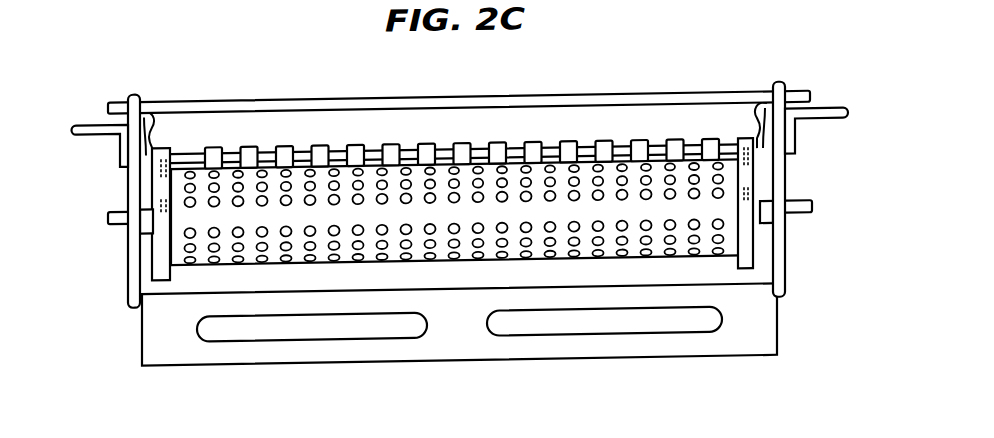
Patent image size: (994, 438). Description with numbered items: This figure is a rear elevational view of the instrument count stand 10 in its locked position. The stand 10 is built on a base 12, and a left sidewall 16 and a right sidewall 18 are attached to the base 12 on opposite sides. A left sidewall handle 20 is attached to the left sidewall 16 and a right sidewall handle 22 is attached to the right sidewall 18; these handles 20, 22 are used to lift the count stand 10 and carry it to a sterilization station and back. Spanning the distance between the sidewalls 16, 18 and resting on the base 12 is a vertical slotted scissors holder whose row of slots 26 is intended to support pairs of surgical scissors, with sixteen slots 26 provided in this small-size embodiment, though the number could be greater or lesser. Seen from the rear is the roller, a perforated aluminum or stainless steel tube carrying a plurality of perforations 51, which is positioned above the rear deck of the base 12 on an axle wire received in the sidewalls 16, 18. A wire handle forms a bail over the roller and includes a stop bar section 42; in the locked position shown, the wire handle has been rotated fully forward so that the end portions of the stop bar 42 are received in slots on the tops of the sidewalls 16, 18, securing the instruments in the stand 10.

The instrument count stand 10 is at (211, 47).
The base 12 is at (748, 358).
The left sidewall 16 is at (128, 276).
The right sidewall 18 is at (788, 275).
The left sidewall handle 20 is at (80, 124).
The right sidewall handle 22 is at (826, 125).
The slots 26 is at (658, 151).
The stop bar section 42 is at (568, 105).
The perforations 51 is at (575, 248).